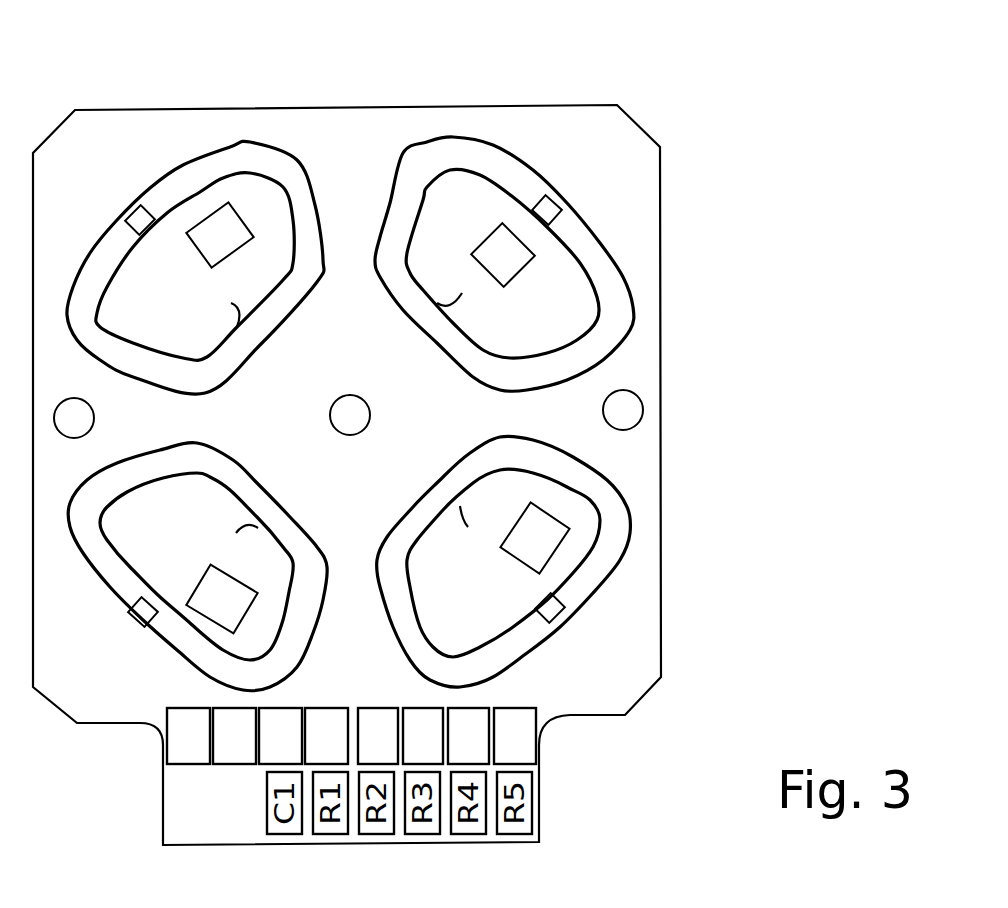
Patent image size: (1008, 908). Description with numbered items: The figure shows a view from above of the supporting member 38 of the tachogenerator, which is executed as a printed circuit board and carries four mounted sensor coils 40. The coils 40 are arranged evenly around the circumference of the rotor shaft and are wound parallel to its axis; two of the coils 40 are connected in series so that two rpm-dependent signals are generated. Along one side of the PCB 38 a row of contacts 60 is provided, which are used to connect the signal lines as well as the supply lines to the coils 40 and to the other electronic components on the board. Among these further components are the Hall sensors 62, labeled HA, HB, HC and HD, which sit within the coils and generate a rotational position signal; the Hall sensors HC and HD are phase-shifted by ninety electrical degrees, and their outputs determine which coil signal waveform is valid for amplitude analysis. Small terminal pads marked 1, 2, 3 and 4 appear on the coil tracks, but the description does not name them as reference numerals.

The supporting member 38 is at (107, 125).
The sensor coil 40 is at (426, 414).
The Hall sensor 62 is at (527, 257).
The contacts 60 is at (540, 737).
The coil terminal pad 1 is at (577, 634).
The coil terminal pad 2 is at (122, 192).
The coil terminal pad 3 is at (575, 193).
The coil terminal pad 4 is at (122, 638).